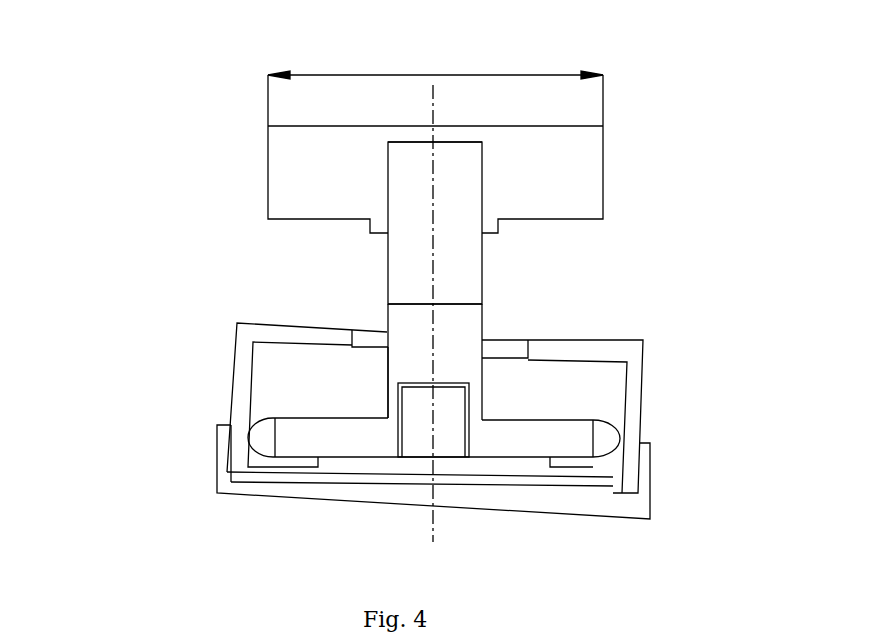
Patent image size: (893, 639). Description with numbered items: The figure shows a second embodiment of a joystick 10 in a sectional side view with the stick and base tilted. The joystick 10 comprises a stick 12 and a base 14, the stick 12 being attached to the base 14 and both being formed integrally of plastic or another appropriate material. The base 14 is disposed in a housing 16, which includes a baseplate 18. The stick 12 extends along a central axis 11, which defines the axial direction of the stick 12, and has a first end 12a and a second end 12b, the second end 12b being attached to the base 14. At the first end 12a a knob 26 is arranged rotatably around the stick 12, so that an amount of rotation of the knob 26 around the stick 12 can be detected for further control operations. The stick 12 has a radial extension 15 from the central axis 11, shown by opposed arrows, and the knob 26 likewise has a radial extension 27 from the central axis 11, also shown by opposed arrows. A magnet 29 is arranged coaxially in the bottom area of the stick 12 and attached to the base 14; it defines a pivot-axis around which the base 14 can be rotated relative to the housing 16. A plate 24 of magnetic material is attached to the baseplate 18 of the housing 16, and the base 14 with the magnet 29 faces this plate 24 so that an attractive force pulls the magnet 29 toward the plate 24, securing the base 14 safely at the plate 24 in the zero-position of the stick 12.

The joystick 10 is at (146, 77).
The central axis 11 is at (486, 335).
The stick 12 is at (406, 265).
The first end 12a is at (406, 172).
The second end 12b is at (393, 361).
The base 14 is at (358, 437).
The radial extension 15 is at (499, 278).
The housing 16 is at (511, 408).
The baseplate 18 is at (433, 488).
The plate 24 is at (391, 511).
The knob 26 is at (511, 154).
The radial extension 27 is at (410, 45).
The magnet 29 is at (453, 420).